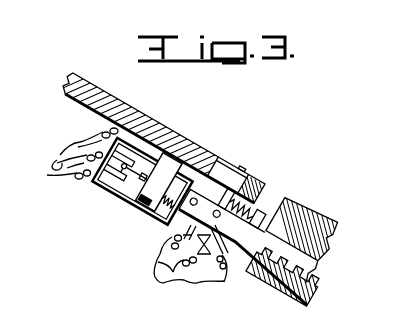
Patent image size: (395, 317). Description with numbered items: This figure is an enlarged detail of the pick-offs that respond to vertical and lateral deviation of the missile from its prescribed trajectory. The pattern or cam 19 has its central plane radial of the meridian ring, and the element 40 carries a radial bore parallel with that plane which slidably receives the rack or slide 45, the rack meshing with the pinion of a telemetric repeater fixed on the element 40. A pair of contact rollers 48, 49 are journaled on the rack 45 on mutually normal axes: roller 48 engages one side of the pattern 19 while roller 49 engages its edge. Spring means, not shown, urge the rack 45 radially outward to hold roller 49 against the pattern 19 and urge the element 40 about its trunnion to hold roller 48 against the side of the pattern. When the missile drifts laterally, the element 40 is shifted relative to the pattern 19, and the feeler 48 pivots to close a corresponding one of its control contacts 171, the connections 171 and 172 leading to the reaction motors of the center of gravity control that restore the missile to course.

The pattern or cam 19 is at (187, 147).
The contact roller 48 is at (140, 200).
The contact roller 49 is at (263, 193).
The element 40 is at (320, 227).
The rack or slide 45 is at (315, 260).
The control contacts 171 is at (74, 145).
The connections 172 is at (176, 283).